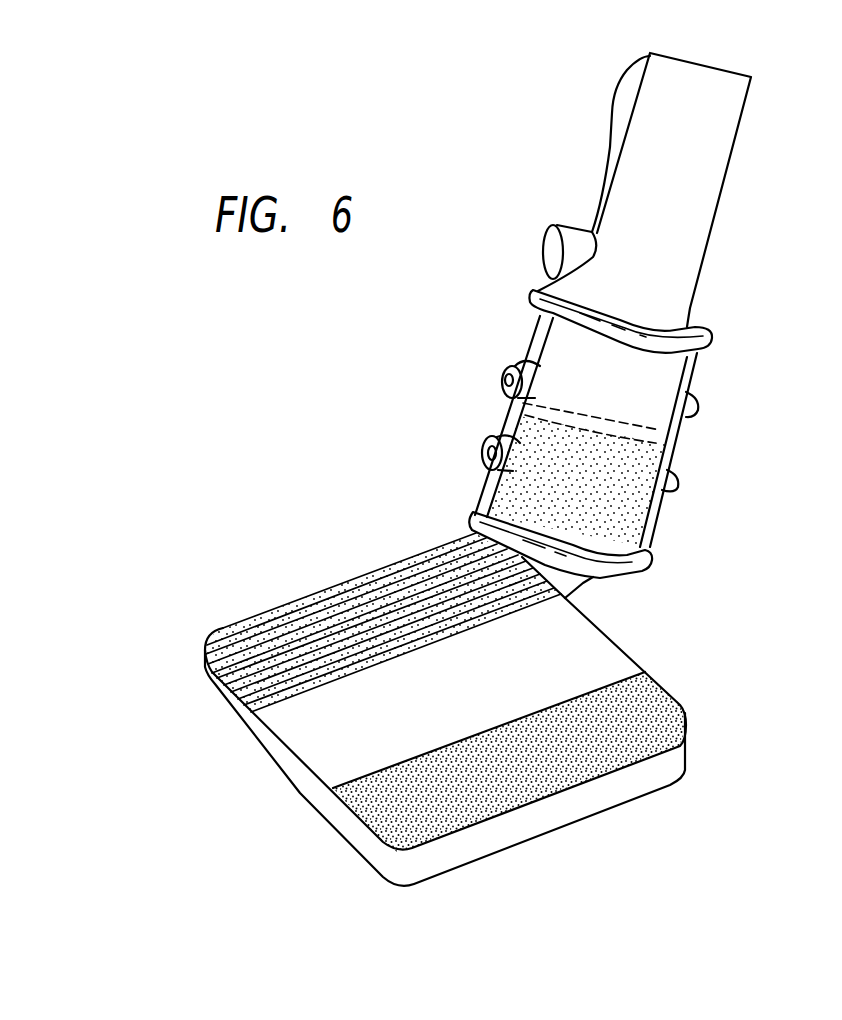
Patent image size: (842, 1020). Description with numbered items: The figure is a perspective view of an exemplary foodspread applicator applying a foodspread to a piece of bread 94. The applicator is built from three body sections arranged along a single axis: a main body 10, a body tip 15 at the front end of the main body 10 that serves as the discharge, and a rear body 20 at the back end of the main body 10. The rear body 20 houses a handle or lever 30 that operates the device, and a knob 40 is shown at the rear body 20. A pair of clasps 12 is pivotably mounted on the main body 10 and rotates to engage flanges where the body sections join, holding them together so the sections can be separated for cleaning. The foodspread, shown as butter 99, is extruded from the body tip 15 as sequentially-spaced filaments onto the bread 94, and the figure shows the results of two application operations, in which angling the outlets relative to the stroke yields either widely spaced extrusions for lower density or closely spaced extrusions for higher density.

The main body 10 is at (520, 410).
The clasps 12 is at (530, 320).
The body tip 15 is at (583, 587).
The rear body 20 is at (722, 193).
The lever 30 is at (613, 85).
The knob 40 is at (553, 252).
The base 94 is at (218, 698).
The butter 99 is at (542, 425).